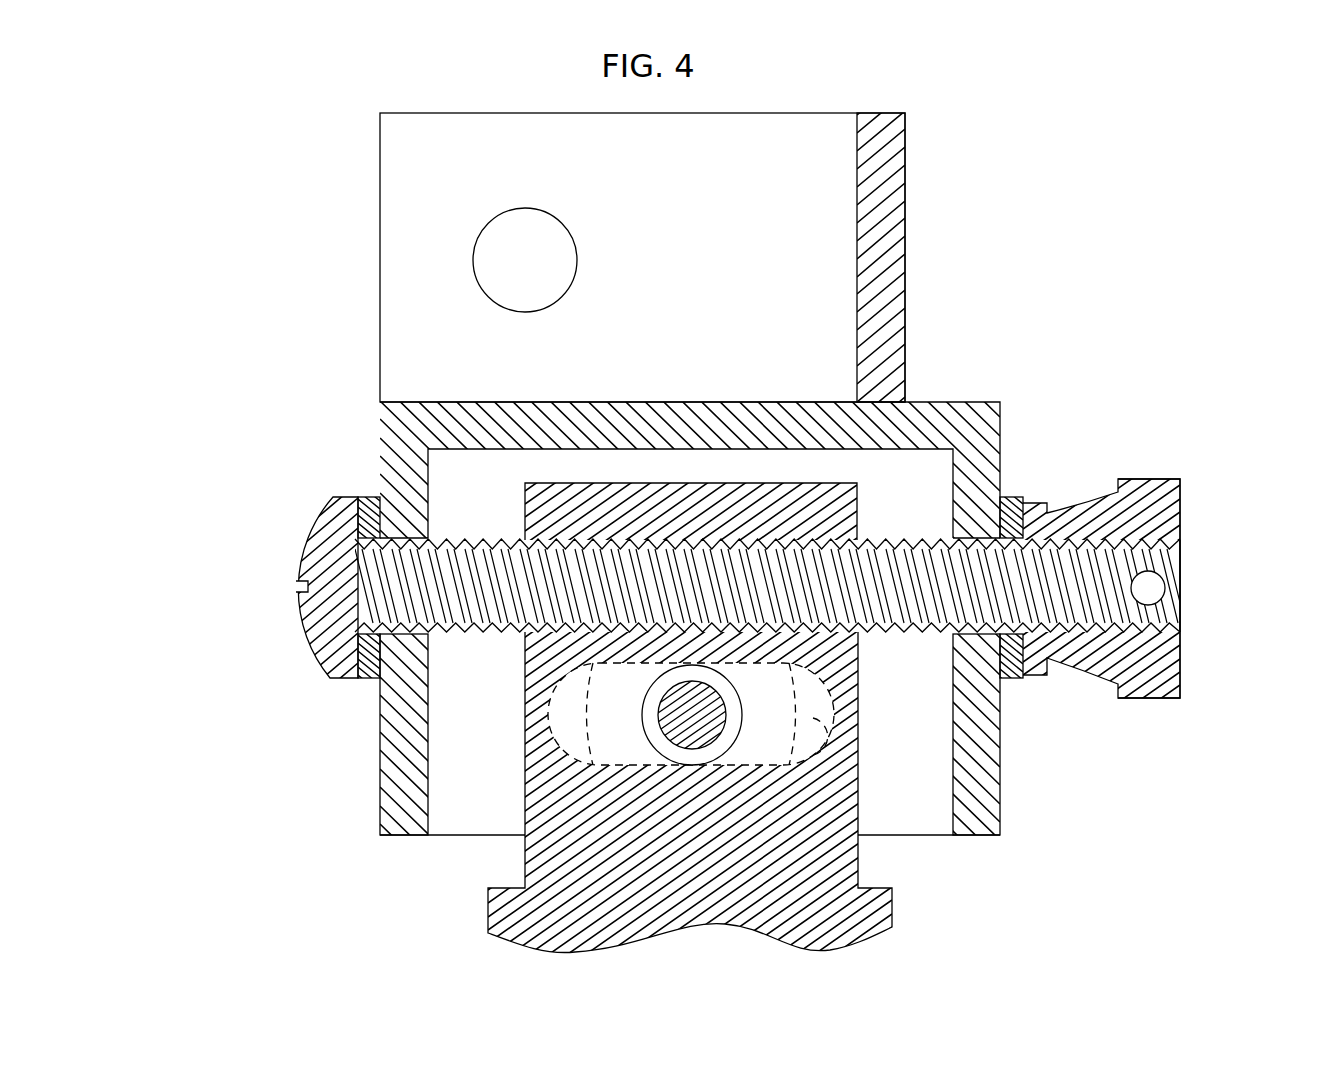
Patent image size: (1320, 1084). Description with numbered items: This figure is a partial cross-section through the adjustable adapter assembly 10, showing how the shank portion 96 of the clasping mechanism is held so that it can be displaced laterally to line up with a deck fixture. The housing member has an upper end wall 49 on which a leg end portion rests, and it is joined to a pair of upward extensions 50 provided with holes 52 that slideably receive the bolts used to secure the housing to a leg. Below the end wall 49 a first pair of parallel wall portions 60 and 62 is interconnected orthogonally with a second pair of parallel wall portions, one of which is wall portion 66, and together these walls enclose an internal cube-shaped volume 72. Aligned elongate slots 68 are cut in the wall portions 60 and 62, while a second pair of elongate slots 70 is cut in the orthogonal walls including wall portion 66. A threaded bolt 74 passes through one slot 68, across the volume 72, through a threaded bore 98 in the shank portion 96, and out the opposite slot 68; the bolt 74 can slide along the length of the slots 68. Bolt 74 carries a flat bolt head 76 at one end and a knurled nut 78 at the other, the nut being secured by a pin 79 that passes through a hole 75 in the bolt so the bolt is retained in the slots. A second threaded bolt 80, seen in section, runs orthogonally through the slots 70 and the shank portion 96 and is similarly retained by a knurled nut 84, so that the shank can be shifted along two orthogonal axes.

The adjustable adapter assembly 10 is at (1020, 305).
The upper end wall 49 is at (672, 402).
The upward extensions 50 is at (380, 185).
The holes 52 is at (482, 232).
The wall portion 60 is at (973, 427).
The wall portion 62 is at (403, 431).
The wall portion 66 is at (889, 525).
The elongate slots 68 is at (388, 572).
The elongate slots 70 is at (815, 750).
The internal cube-shaped volume 72 is at (910, 458).
The threaded bolt 74 is at (1083, 662).
The hole 75 is at (1165, 589).
The flat bolt head 76 is at (316, 652).
The knurled nut 78 is at (1148, 698).
The pin 79 is at (1148, 588).
The threaded bolt 80 is at (690, 716).
The knurled nut 84 is at (548, 714).
The shank portion 96 is at (771, 483).
The threaded bore 98 is at (573, 548).